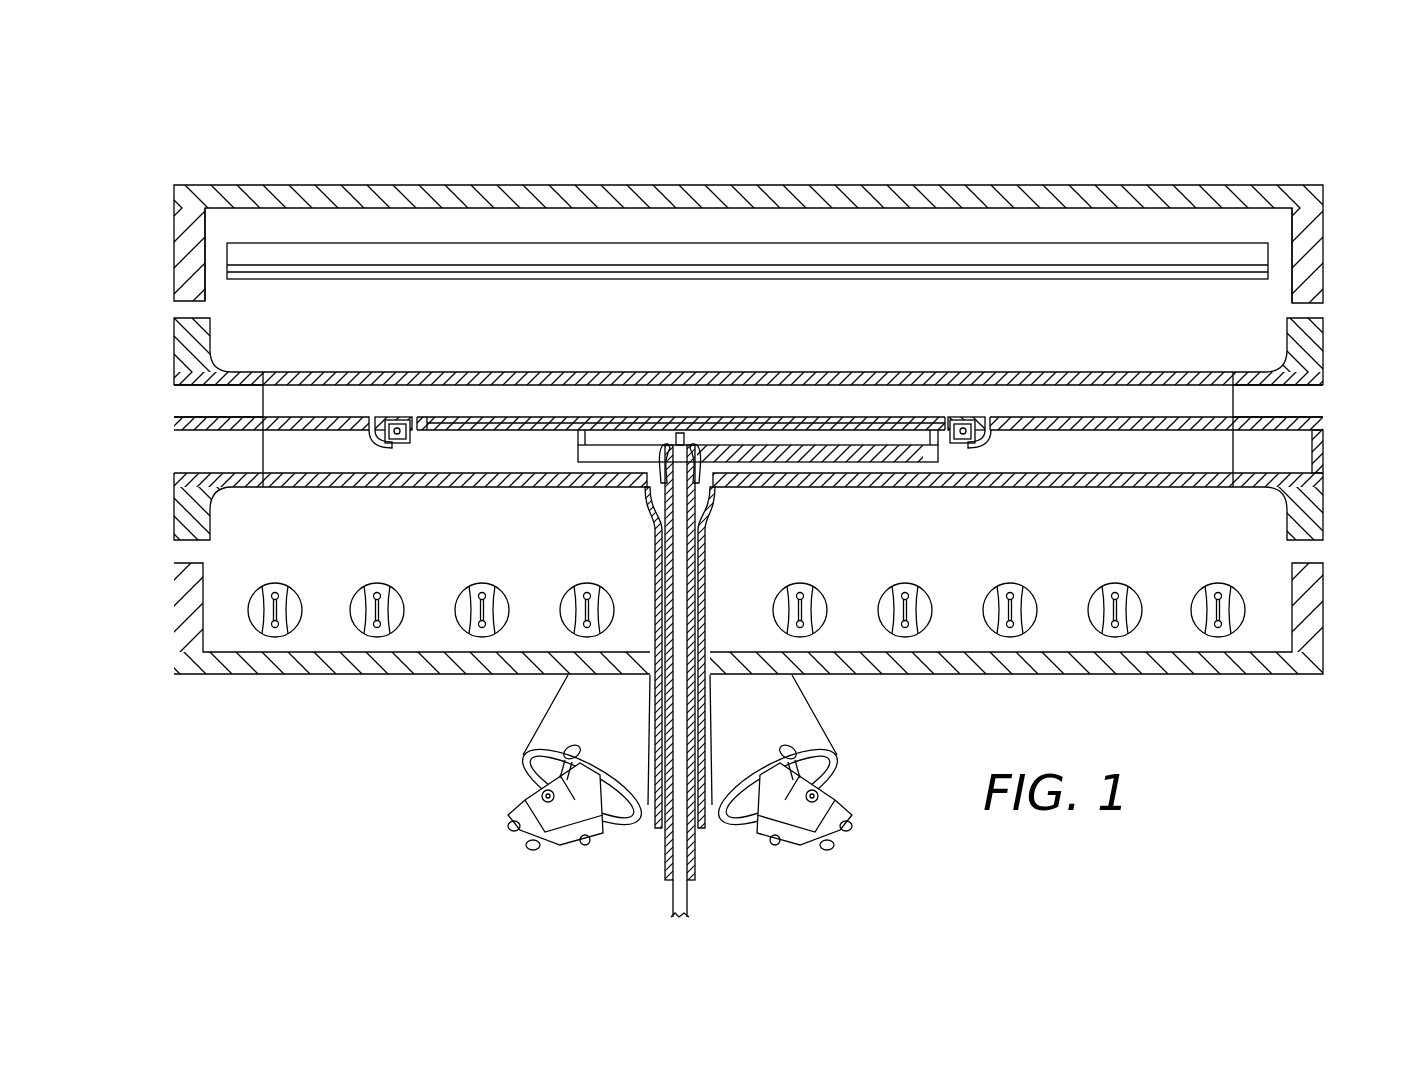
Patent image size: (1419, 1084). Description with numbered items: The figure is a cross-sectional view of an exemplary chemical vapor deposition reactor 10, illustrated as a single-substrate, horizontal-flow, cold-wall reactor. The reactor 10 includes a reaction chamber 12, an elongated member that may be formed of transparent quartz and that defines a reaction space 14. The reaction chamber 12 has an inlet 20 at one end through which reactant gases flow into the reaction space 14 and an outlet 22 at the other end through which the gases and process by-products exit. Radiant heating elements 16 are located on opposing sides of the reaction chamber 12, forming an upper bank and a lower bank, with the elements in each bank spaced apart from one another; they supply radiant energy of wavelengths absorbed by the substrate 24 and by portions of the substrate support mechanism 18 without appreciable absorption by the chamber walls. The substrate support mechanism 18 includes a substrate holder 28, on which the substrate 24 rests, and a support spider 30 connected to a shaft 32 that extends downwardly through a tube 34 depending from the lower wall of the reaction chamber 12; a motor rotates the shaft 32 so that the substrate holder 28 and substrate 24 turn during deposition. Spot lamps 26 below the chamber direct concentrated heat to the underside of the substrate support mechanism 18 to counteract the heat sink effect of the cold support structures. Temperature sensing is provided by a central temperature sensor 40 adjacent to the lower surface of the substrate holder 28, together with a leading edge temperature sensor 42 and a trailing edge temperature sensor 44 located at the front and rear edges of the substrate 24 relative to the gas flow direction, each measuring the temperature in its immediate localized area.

The chemical vapor deposition reactor 10 is at (1210, 145).
The reaction chamber 12 is at (1326, 343).
The reaction space 14 is at (1100, 403).
The radiant heating elements 16 is at (737, 253).
The substrate support mechanism 18 is at (482, 430).
The inlet 20 is at (192, 398).
The outlet 22 is at (1302, 404).
The substrate 24 is at (800, 421).
The spot lamps 26 is at (522, 772).
The substrate holder 28 is at (880, 432).
The support spider 30 is at (832, 462).
The shaft 32 is at (690, 531).
The tube 34 is at (707, 570).
The central temperature sensor 40 is at (682, 440).
The leading edge temperature sensor 42 is at (399, 426).
The trailing edge temperature sensor 44 is at (963, 432).